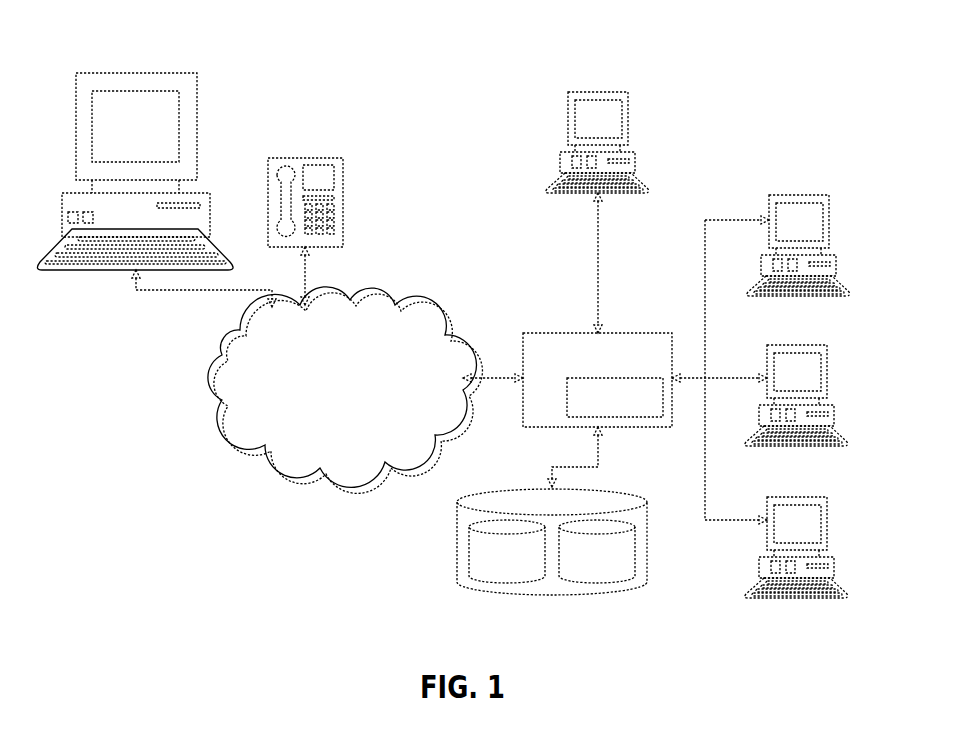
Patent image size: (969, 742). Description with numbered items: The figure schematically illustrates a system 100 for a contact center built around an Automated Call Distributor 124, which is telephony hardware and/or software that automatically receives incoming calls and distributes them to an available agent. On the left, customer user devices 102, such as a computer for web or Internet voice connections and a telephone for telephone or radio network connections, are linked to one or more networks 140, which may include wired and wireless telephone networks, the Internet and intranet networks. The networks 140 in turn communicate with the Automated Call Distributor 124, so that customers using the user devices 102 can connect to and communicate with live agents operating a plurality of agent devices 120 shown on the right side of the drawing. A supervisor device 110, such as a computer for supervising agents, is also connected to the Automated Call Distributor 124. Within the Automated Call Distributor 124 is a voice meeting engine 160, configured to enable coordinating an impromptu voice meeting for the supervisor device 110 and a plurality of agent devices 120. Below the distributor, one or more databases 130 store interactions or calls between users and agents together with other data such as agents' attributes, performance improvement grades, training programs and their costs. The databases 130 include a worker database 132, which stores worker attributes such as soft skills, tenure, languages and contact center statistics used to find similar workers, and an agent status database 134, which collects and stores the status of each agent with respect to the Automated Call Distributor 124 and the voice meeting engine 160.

The system 100 is at (813, 63).
The user devices 102 is at (196, 128).
The supervisor device 110 is at (632, 117).
The agent devices 120 is at (808, 195).
The Automated Call Distributor 124 is at (545, 368).
The databases 130 is at (457, 537).
The worker database 132 is at (523, 568).
The agent status database 134 is at (613, 568).
The networks 140 is at (331, 398).
The voice meeting engine 160 is at (597, 406).